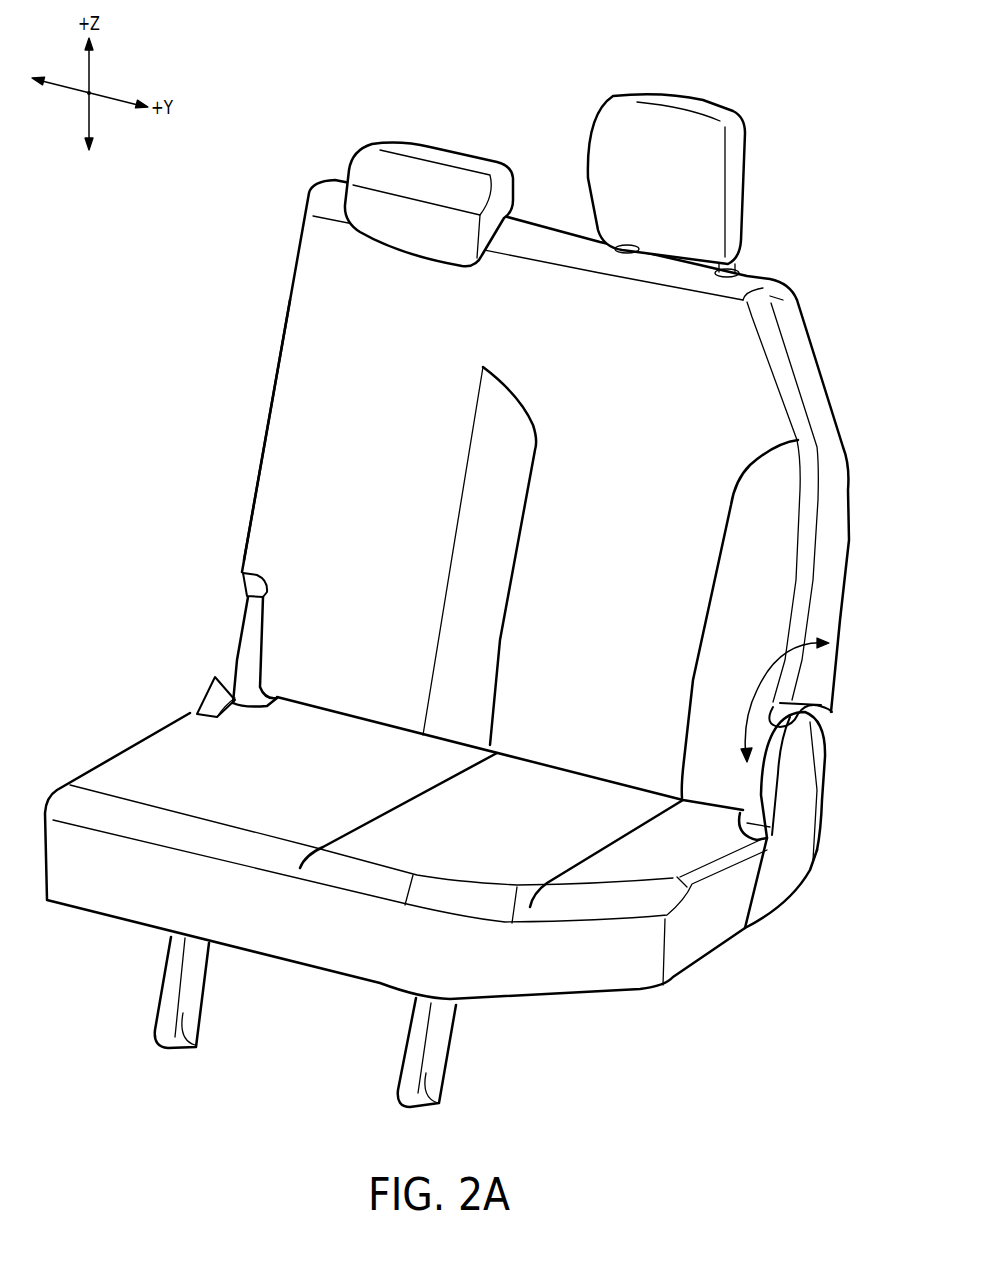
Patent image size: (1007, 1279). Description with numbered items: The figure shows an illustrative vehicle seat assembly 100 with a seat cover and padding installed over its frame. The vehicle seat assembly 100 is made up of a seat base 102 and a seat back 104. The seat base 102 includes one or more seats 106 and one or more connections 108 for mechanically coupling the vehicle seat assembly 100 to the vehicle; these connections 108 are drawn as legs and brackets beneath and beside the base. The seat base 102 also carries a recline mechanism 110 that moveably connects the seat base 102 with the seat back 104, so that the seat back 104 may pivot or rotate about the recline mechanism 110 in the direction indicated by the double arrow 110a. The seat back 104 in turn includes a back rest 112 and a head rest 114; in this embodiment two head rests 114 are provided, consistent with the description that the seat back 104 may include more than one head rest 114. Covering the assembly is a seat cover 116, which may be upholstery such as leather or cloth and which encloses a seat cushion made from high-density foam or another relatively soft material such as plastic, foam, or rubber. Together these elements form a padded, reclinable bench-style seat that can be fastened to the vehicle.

The vehicle seat assembly 100 is at (480, 557).
The seat base 102 is at (705, 952).
The seat back 104 is at (840, 523).
The seat 106 is at (303, 787).
The connection 108 is at (242, 650).
The recline mechanism 110 is at (810, 770).
The double arrow 110a is at (777, 662).
The back rest 112 is at (613, 597).
The head rest 114 is at (677, 194).
The seat cover 116 is at (310, 338).